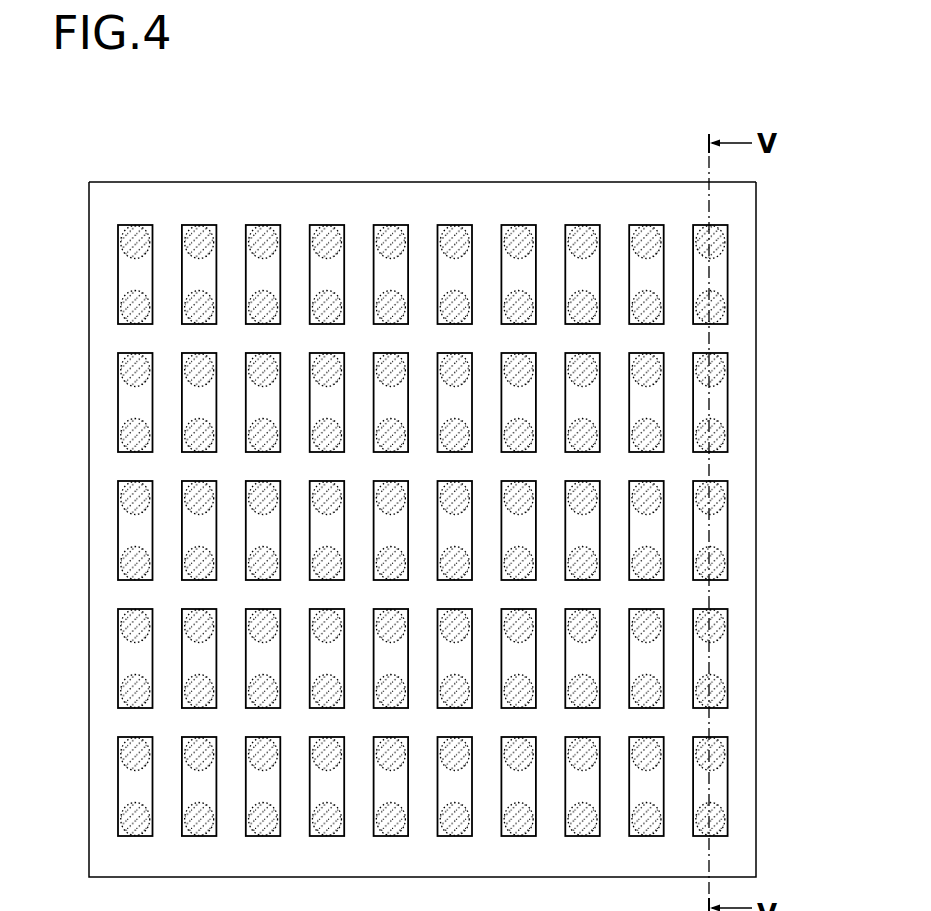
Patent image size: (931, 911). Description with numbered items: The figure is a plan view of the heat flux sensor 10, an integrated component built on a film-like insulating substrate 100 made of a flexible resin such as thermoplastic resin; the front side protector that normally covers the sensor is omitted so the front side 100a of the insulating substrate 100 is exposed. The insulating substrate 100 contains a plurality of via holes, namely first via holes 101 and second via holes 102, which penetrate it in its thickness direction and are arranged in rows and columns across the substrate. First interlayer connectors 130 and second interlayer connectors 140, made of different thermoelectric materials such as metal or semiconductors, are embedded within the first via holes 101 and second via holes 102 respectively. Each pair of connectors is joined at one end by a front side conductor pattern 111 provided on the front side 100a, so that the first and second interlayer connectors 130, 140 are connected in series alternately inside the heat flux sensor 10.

The heat flux sensor 10 is at (90, 151).
The insulating substrate 100 is at (231, 180).
The front side 100a is at (533, 205).
The first via hole 101 is at (727, 318).
The second via hole 102 is at (719, 249).
The front side conductor pattern 111 is at (720, 278).
The first interlayer connector 130 is at (725, 324).
The second interlayer connector 140 is at (726, 262).